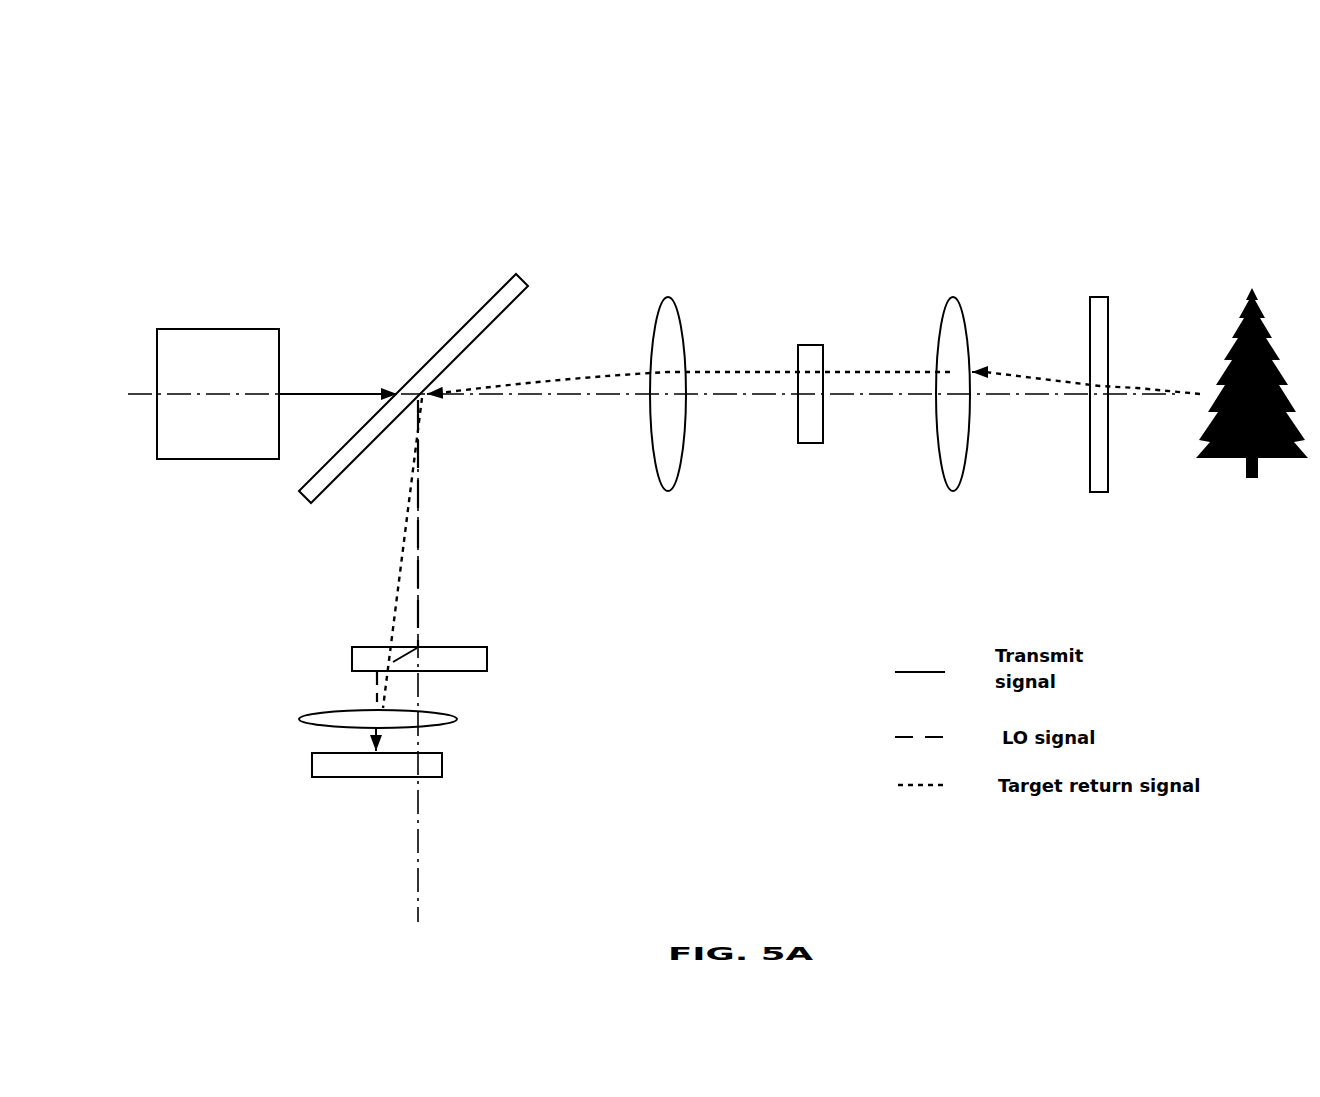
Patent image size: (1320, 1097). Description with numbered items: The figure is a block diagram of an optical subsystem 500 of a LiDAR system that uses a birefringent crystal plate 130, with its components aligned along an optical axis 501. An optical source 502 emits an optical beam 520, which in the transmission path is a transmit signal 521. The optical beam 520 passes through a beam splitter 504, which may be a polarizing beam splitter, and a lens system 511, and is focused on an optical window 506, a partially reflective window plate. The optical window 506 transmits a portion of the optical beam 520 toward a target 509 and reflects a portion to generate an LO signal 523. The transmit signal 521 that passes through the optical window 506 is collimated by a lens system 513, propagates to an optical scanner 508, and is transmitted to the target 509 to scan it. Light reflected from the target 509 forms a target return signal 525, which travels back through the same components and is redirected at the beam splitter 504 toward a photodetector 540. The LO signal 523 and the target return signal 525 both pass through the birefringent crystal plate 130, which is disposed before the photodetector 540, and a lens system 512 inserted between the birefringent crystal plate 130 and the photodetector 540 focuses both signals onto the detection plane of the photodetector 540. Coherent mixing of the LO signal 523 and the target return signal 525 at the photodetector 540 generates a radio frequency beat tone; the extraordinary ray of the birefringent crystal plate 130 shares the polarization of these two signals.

The optical subsystem 500 is at (188, 105).
The optical axis 501 is at (470, 863).
The optical source 502 is at (197, 329).
The beam splitter 504 is at (473, 315).
The optical window 506 is at (800, 345).
The optical scanner 508 is at (1090, 297).
The target 509 is at (1240, 308).
The lens system 511 is at (658, 313).
The lens system 512 is at (320, 715).
The lens system 513 is at (950, 313).
The optical beam 520 is at (310, 388).
The transmit signal 521 is at (342, 388).
The LO signal 523 is at (750, 480).
The target return signal 525 is at (295, 542).
The birefringent crystal plate 130 is at (473, 655).
The photodetector 540 is at (378, 777).